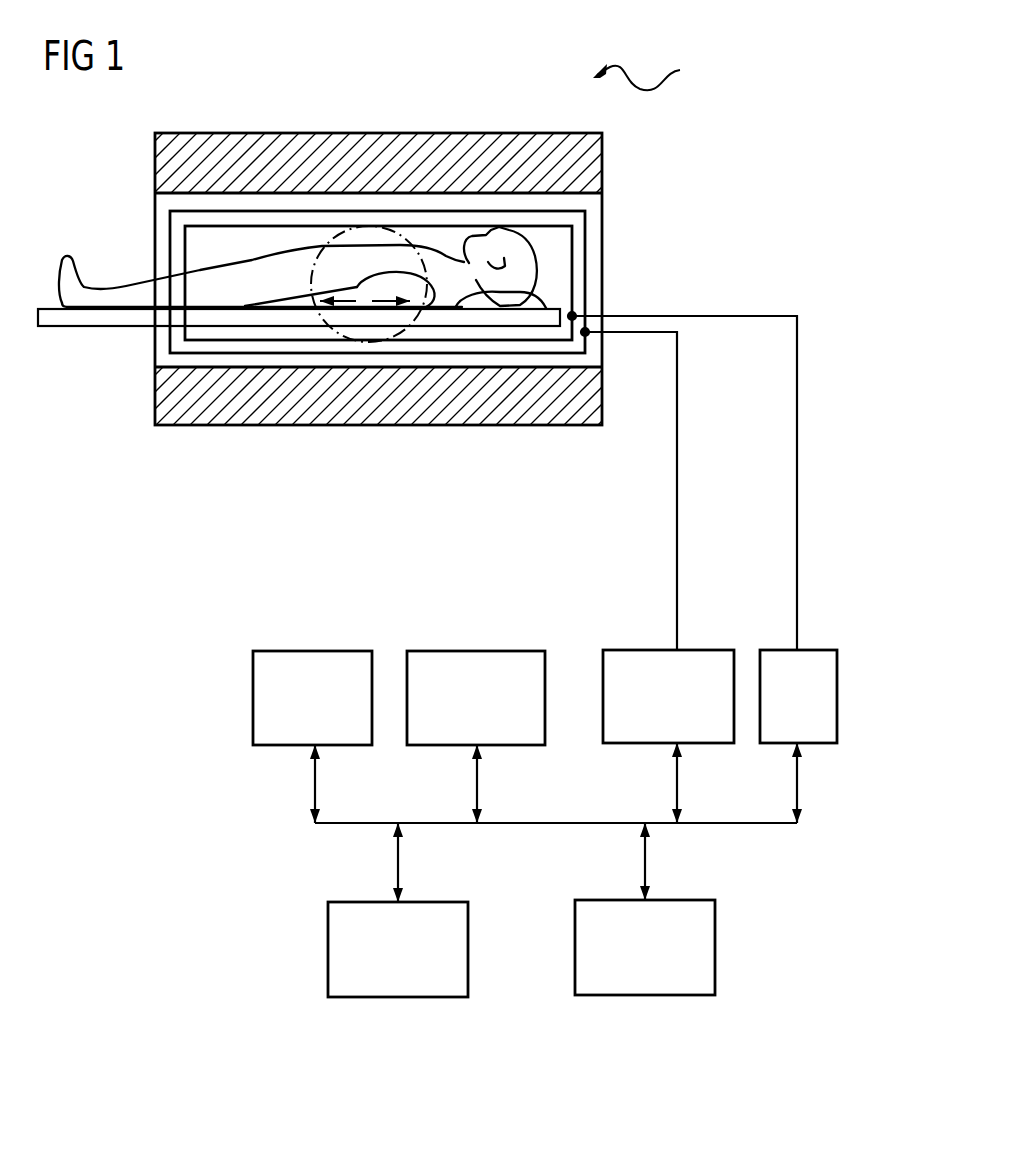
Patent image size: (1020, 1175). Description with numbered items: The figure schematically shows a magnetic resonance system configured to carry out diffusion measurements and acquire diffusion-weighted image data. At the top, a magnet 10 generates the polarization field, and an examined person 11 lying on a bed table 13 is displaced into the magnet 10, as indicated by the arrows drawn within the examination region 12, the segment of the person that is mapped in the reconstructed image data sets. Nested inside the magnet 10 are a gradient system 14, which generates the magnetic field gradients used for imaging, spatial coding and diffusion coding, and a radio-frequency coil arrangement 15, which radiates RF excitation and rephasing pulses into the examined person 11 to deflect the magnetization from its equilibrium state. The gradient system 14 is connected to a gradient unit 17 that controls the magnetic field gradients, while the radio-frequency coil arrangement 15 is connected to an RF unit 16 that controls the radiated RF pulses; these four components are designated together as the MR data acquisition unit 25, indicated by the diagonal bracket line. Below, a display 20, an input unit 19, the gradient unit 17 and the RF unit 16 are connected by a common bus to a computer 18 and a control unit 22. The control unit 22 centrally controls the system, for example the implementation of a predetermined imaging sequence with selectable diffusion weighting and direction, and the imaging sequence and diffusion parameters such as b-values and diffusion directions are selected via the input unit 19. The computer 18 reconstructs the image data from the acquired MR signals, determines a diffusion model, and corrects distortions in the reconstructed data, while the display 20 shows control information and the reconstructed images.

The magnet 10 is at (378, 133).
The examined person 11 is at (108, 290).
The examination region 12 is at (303, 273).
The bed table 13 is at (98, 326).
The gradient system 14 is at (586, 227).
The radio-frequency coil arrangement 15 is at (574, 267).
The RF unit 16 is at (815, 650).
The gradient unit 17 is at (712, 650).
The computer 18 is at (470, 950).
The input unit 19 is at (474, 651).
The display 20 is at (312, 651).
The control unit 22 is at (717, 950).
The MR data acquisition unit 25 is at (608, 115).